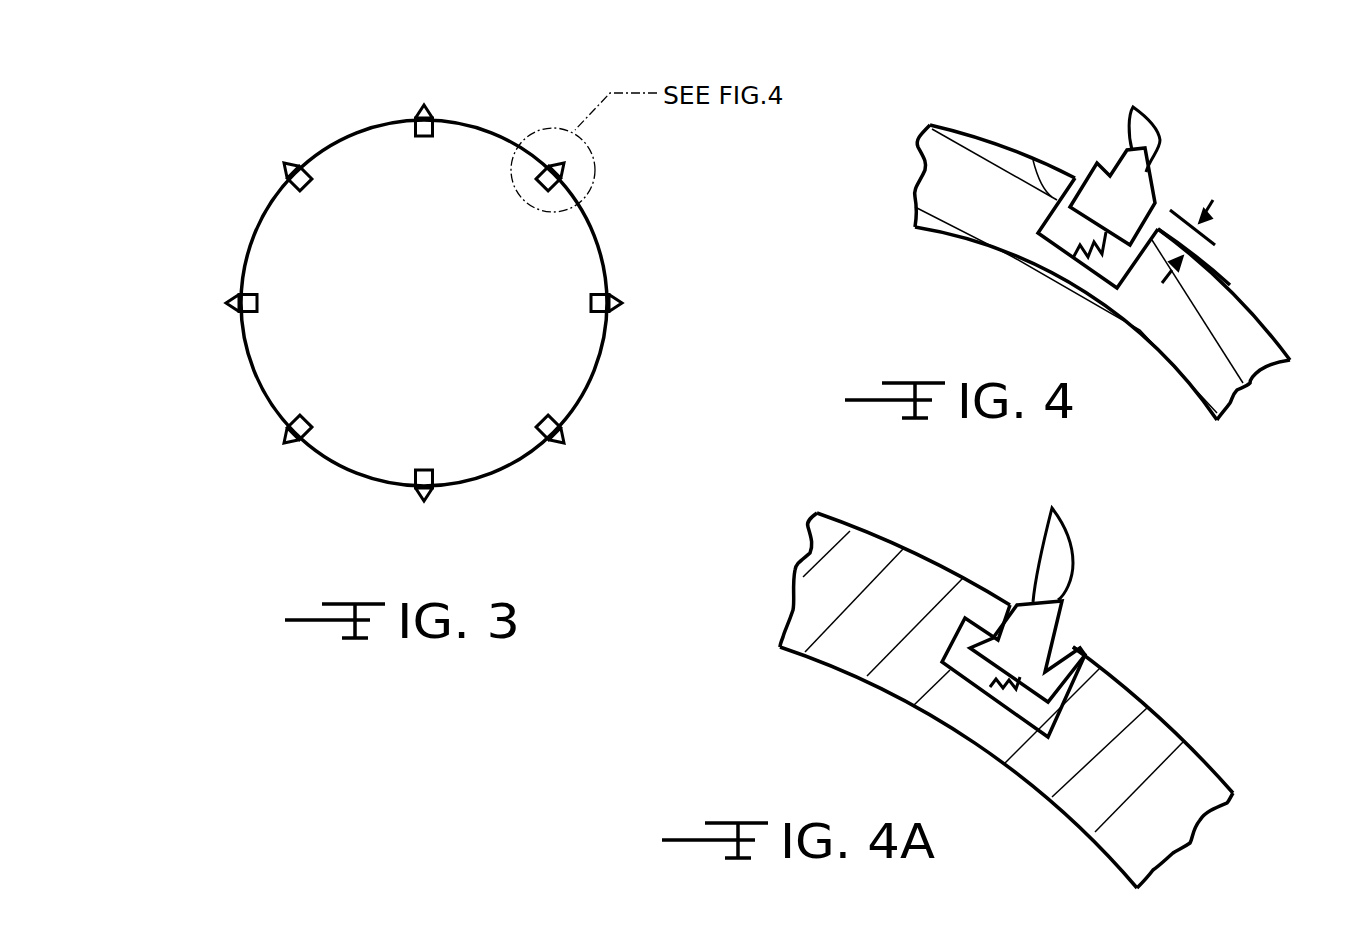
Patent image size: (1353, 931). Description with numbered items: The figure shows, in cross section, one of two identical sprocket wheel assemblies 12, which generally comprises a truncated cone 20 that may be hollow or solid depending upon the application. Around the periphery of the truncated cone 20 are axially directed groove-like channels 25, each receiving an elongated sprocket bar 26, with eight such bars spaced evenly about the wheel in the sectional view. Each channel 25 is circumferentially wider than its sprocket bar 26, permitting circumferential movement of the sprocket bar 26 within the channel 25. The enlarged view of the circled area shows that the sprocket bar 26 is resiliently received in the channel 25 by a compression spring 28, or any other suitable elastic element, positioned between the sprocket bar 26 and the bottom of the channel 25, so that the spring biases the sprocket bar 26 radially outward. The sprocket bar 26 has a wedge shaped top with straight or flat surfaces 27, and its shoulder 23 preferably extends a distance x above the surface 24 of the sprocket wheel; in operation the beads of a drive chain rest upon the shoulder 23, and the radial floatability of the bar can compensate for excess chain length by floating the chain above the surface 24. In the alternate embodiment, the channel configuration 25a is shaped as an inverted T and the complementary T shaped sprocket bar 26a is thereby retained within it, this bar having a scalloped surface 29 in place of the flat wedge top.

In FIG. 3, the sprocket wheel assembly 12 is at (420, 315).
In FIG. 3, the truncated cone 20 is at (597, 388).
In FIG. 4, the truncated cone 20 is at (1228, 310).
In FIG. 4A, the truncated cone 20 is at (1145, 742).
In FIG. 4, the shoulder 23 is at (1150, 198).
In FIG. 4, the surface 24 is at (1230, 285).
In FIG. 4, the channel 25 is at (1033, 158).
In FIG. 3, the sprocket bar 26 is at (288, 166).
In FIG. 4, the sprocket bar 26 is at (1127, 205).
In FIG. 4, the flat surface 27 is at (1139, 124).
In FIG. 4, the compression spring 28 is at (1097, 257).
In FIG. 4A, the compression spring 28 is at (1005, 692).
In FIG. 4A, the scalloped surface 29 is at (1053, 541).
In FIG. 4A, the channel configuration 25a is at (943, 648).
In FIG. 4A, the sprocket bar 26a is at (1048, 630).